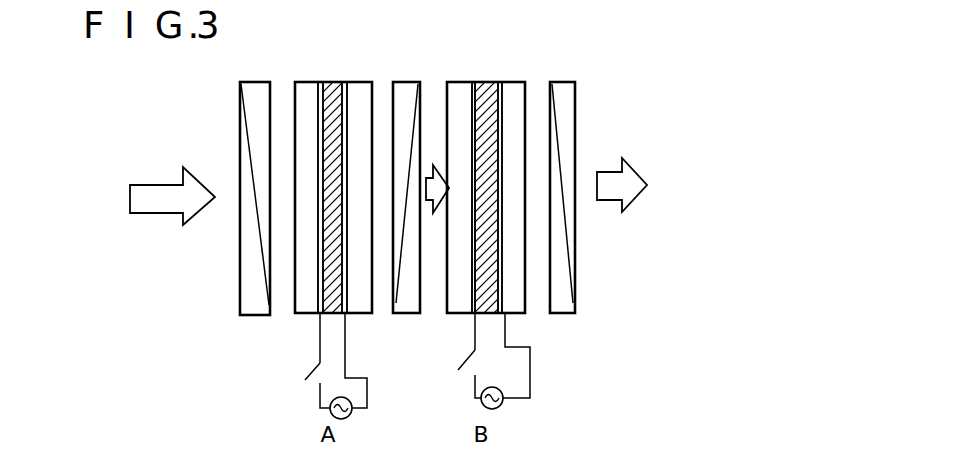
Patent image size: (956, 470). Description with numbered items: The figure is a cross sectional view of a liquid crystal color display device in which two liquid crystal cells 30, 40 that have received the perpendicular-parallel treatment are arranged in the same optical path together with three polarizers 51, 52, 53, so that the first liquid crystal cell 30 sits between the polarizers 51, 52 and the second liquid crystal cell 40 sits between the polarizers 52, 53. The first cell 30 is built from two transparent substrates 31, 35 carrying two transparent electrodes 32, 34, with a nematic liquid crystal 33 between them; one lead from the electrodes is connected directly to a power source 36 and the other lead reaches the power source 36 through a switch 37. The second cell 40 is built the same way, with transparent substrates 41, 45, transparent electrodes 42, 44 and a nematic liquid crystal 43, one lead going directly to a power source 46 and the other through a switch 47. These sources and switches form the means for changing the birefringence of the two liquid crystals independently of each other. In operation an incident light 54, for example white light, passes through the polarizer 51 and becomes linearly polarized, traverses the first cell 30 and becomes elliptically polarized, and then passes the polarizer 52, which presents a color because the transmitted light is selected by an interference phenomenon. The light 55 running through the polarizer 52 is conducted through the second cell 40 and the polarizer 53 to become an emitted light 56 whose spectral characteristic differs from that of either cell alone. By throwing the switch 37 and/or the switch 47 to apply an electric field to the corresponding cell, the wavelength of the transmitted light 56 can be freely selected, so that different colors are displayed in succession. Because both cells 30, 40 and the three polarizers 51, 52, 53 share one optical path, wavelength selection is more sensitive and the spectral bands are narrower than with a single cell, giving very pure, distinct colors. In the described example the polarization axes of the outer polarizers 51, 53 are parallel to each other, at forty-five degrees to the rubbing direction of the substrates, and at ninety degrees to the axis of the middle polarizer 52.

The first liquid crystal cell 30 is at (333, 174).
The transparent substrate 31 is at (307, 84).
The transparent electrode 32 is at (322, 84).
The liquid crystal 33 is at (336, 83).
The transparent electrode 34 is at (343, 83).
The transparent substrate 35 is at (364, 84).
The power source 36 is at (357, 416).
The switch 37 is at (302, 386).
The second liquid crystal cell 40 is at (494, 178).
The transparent substrate 41 is at (462, 84).
The transparent electrode 42 is at (476, 84).
The liquid crystal 43 is at (492, 84).
The transparent electrode 44 is at (503, 84).
The transparent substrate 45 is at (518, 84).
The power source 46 is at (506, 411).
The switch 47 is at (458, 378).
The polarizer 51 is at (252, 86).
The polarizer 52 is at (408, 86).
The polarizer 53 is at (568, 86).
The incident light 54 is at (153, 213).
The transmitted light 55 is at (431, 200).
The emitted light 56 is at (614, 193).